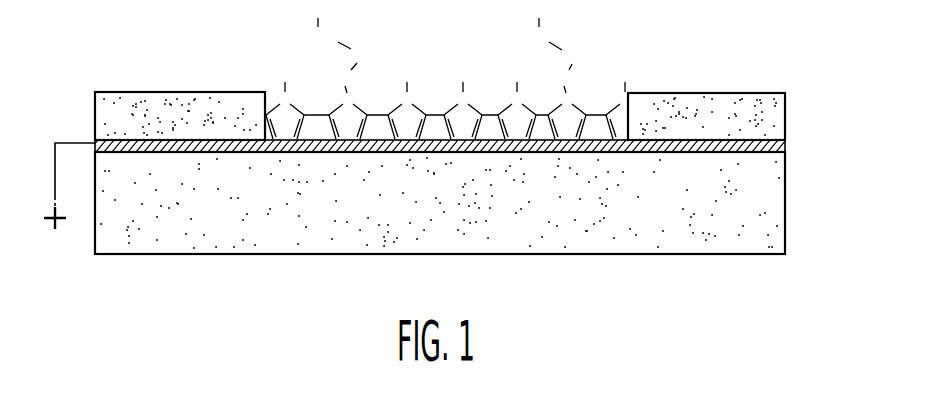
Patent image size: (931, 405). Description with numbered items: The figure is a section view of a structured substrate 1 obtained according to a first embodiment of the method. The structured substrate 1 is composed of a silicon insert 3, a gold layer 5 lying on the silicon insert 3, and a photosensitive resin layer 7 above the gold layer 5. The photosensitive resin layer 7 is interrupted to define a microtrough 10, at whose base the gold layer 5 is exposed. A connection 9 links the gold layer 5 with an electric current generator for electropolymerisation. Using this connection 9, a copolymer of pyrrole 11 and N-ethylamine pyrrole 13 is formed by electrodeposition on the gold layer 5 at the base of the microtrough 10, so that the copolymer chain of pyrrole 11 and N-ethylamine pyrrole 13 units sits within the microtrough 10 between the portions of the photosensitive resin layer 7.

The structured substrate 1 is at (757, 87).
The silicon insert 3 is at (736, 237).
The gold layer 5 is at (682, 110).
The photosensitive resin layer 7 is at (193, 97).
The connection of the gold layer with an electric current generator 9 is at (69, 141).
The microtrough 10 is at (626, 161).
The pyrrole 11 is at (438, 107).
The N-ethylamine pyrrole 13 is at (548, 68).